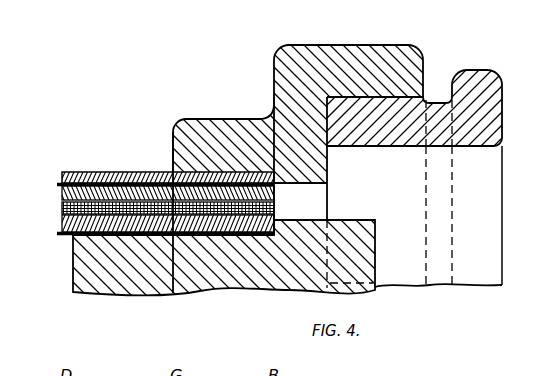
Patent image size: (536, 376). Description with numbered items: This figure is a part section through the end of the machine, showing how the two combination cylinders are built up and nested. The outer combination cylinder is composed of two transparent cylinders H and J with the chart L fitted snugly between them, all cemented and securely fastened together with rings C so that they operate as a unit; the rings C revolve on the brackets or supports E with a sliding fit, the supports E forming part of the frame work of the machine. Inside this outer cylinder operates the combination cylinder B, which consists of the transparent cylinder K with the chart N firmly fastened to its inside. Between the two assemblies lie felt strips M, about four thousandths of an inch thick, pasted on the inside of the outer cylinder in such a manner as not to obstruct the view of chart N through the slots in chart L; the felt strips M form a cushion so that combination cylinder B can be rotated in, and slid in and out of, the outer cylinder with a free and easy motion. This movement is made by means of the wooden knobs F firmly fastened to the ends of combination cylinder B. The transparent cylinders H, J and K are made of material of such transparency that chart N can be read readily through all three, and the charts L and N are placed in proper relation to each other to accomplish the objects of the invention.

The combination cylinder B is at (123, 272).
The rings C is at (274, 85).
The supports E is at (462, 70).
The wooden knobs F is at (375, 288).
The transparent cylinder H is at (63, 173).
The transparent cylinder J is at (87, 188).
The chart L is at (106, 183).
The felt strips M is at (60, 210).
The transparent cylinder K is at (62, 228).
The chart N is at (67, 237).